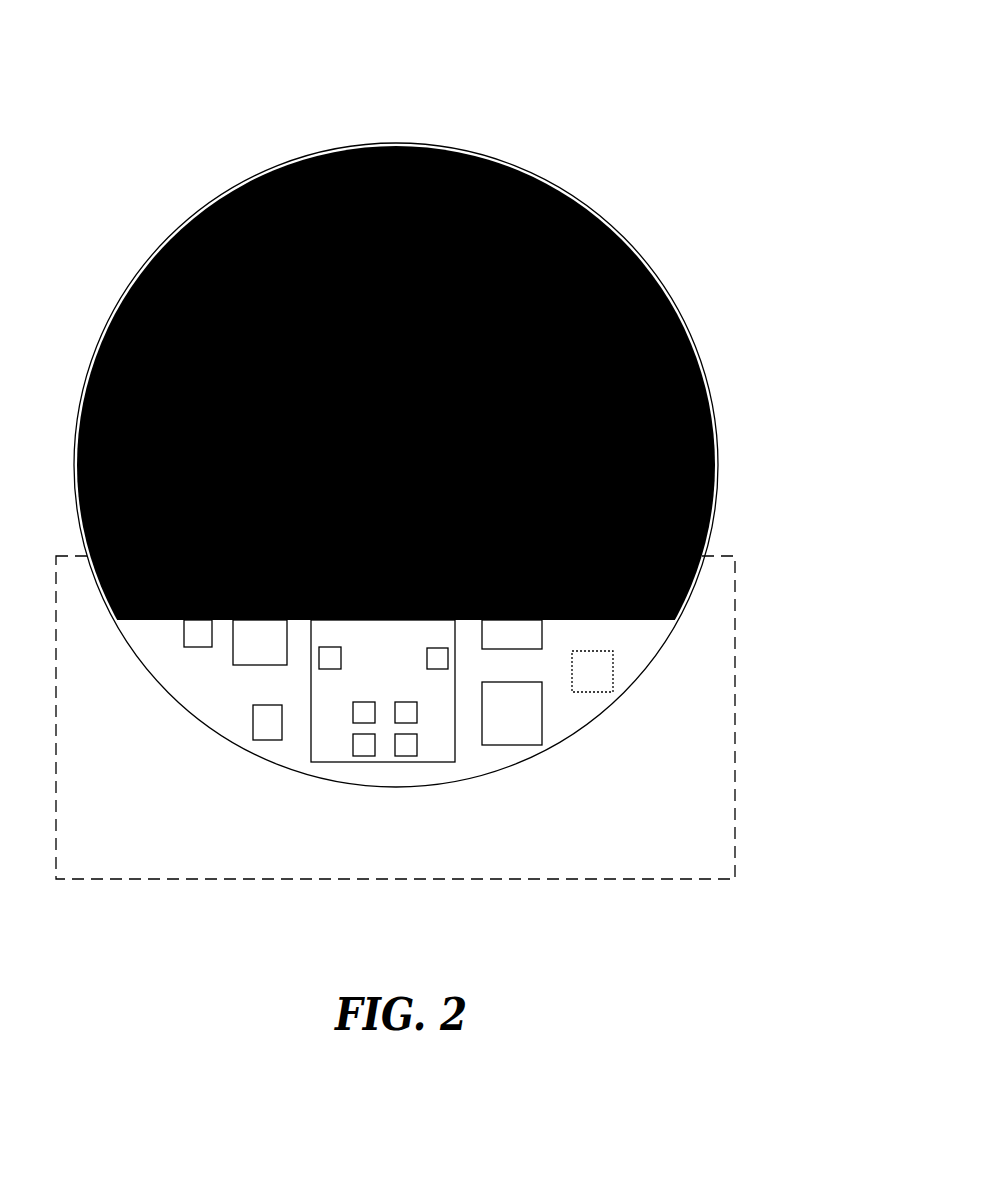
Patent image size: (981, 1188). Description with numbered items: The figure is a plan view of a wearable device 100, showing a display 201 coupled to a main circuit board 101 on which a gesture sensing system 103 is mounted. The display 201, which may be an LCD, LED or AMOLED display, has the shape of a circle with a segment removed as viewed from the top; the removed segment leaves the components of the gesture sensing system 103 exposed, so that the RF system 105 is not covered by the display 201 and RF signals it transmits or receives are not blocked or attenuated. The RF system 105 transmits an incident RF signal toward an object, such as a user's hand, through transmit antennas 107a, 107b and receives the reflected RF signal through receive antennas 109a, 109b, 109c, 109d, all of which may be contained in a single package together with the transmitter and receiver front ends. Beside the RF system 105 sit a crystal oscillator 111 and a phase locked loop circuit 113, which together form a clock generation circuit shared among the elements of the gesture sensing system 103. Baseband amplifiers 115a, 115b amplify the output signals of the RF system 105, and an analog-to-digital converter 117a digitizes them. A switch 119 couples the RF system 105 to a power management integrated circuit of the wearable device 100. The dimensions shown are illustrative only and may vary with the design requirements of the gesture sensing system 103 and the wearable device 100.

The wearable device 100 is at (712, 70).
The main circuit board 101 is at (487, 768).
The gesture sensing system 103 is at (735, 587).
The RF system 105 is at (330, 730).
The transmit antenna 107a is at (331, 657).
The transmit antenna 107b is at (434, 662).
The receive antenna 109a is at (367, 710).
The receive antenna 109b is at (363, 740).
The receive antenna 109c is at (412, 710).
The receive antenna 109d is at (412, 742).
The crystal oscillator 111 is at (196, 628).
The phase locked loop circuit 113 is at (252, 655).
The baseband amplifier 115a is at (525, 727).
The baseband amplifier 115b is at (528, 643).
The analog-to-digital converter 117a is at (603, 672).
The switch 119 is at (263, 730).
The display 201 is at (545, 183).